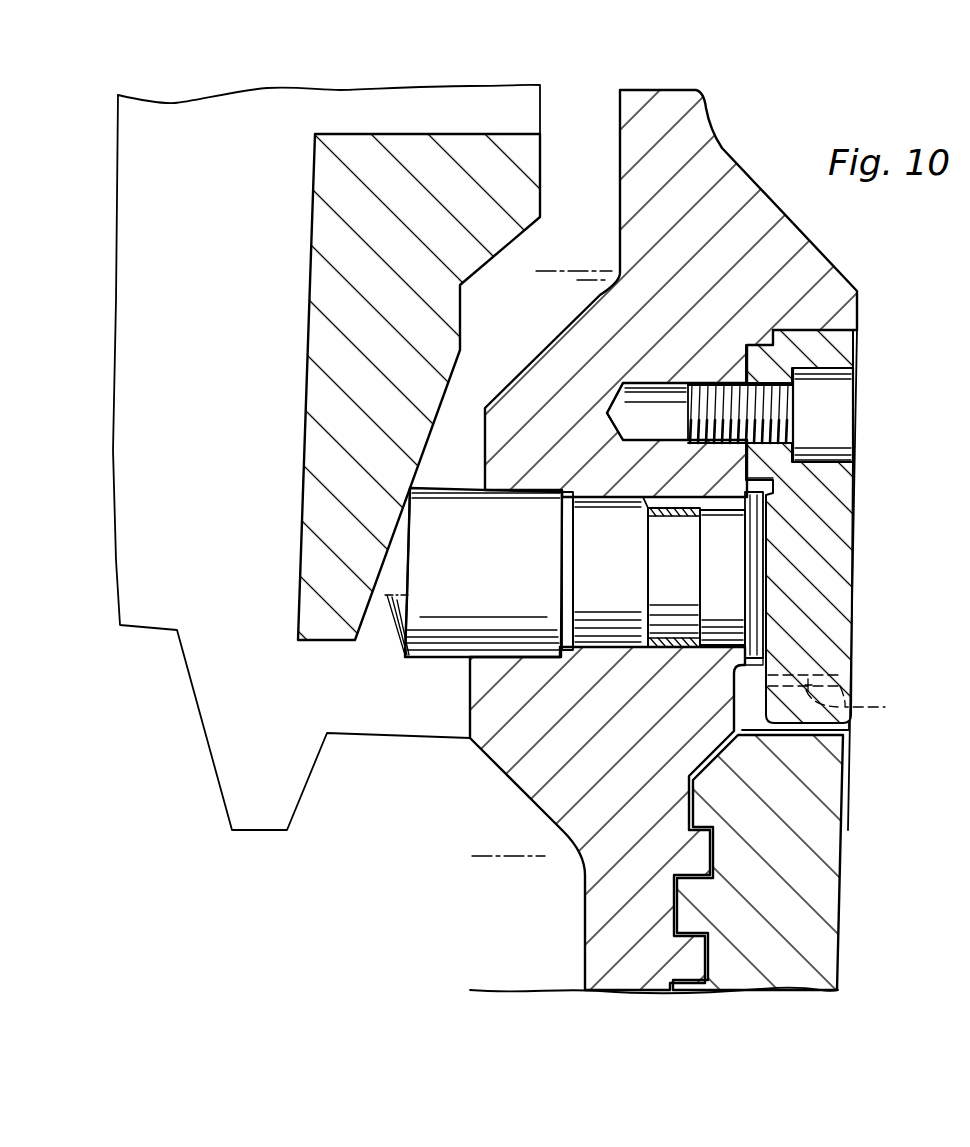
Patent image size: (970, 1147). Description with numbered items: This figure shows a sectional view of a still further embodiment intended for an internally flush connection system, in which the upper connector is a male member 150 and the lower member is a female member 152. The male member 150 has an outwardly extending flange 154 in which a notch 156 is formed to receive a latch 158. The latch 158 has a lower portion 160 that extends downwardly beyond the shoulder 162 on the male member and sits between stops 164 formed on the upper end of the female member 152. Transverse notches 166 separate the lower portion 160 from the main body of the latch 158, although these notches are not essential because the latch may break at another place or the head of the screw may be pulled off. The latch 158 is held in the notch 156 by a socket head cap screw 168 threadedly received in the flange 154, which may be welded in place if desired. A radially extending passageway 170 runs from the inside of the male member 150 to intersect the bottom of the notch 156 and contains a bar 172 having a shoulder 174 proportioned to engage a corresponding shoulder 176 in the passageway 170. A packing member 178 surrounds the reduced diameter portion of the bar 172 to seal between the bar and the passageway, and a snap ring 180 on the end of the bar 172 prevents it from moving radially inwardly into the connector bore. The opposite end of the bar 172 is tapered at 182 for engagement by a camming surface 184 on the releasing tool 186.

The male member 150 is at (735, 154).
The female member 152 is at (845, 830).
The flange 154 is at (797, 241).
The notch 156 is at (845, 344).
The latch 158 is at (838, 480).
The lower portion 160 is at (838, 540).
The shoulder 162 is at (849, 699).
The stops 164 is at (845, 733).
The transverse notches 166 is at (750, 491).
The socket head cap screw 168 is at (838, 402).
The radially extending passageway 170 is at (600, 652).
The bar 172 is at (500, 575).
The shoulder 174 is at (578, 507).
The shoulder 176 is at (645, 498).
The packing member 178 is at (676, 515).
The snap ring 180 is at (746, 590).
The tapered end 182 is at (398, 618).
The camming surface 184 is at (404, 526).
The releasing tool 186 is at (490, 194).